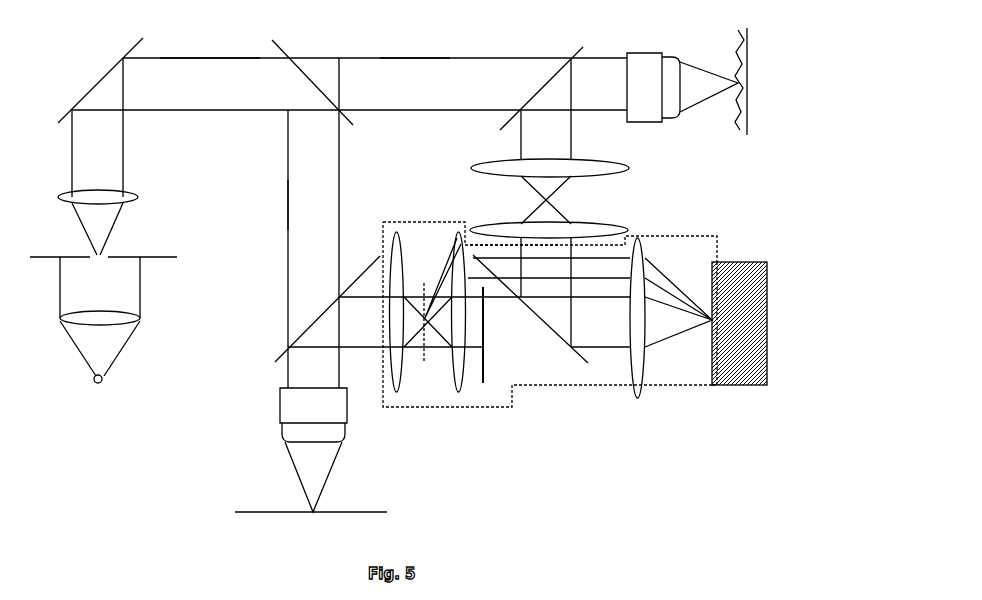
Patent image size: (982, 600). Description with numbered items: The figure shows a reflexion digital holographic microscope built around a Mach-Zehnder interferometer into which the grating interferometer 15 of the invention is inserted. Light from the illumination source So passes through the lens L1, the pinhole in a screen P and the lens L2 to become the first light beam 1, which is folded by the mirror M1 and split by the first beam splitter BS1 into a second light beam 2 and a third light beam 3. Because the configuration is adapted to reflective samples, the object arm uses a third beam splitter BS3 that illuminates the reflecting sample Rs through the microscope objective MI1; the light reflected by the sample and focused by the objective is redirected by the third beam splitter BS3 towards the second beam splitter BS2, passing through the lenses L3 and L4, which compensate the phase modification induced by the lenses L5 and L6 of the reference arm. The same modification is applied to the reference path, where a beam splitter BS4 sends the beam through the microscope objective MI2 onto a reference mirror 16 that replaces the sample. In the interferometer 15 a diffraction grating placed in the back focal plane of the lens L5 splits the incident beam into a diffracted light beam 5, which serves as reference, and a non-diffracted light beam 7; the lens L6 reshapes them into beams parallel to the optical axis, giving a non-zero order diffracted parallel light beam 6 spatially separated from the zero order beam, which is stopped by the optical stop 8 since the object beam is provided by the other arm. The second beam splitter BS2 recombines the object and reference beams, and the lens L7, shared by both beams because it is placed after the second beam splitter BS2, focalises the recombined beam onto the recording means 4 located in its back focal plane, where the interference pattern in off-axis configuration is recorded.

The first light beam 1 is at (193, 77).
The second light beam 2 is at (418, 83).
The third light beam 3 is at (298, 203).
The recording means 4 is at (738, 260).
The diffracted light beam 5 is at (446, 287).
The non-zero order diffracted parallel light beam 6 is at (493, 252).
The non-diffracted light beam 7 is at (432, 337).
The optical stop 8 is at (488, 390).
The interferometer of the invention 15 is at (682, 385).
The reference mirror 16 is at (383, 512).
The mirror M1 is at (130, 52).
The first beam splitter BS1 is at (280, 48).
The second beam splitter BS2 is at (580, 367).
The third beam splitter BS3 is at (572, 52).
The beam splitter BS4 is at (285, 347).
The microscope objective MI1 is at (648, 53).
The microscope objective MI2 is at (347, 425).
The reflecting sample Rs is at (750, 105).
The lens L1 is at (140, 320).
The lens L2 is at (137, 200).
The lens L3 is at (625, 170).
The lens L4 is at (605, 225).
The lens L5 is at (394, 235).
The lens L6 is at (458, 236).
The lens L7 is at (640, 240).
The pinhole in a screen P is at (105, 252).
The illumination source So is at (103, 383).